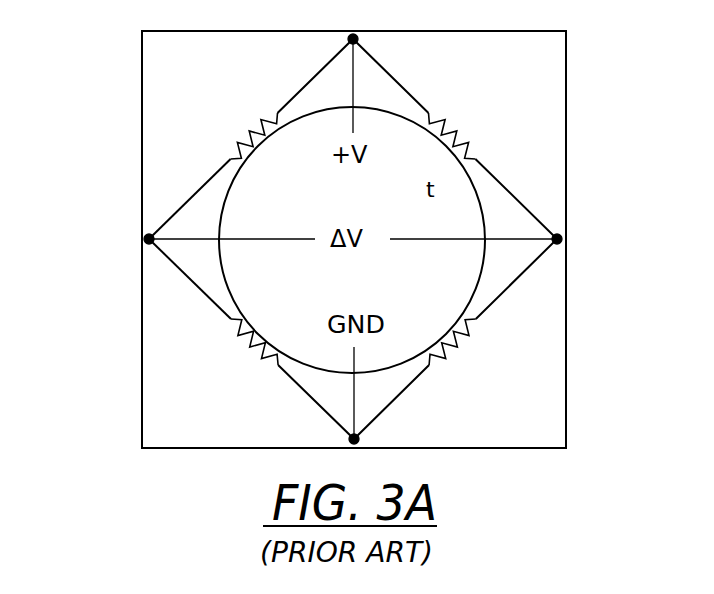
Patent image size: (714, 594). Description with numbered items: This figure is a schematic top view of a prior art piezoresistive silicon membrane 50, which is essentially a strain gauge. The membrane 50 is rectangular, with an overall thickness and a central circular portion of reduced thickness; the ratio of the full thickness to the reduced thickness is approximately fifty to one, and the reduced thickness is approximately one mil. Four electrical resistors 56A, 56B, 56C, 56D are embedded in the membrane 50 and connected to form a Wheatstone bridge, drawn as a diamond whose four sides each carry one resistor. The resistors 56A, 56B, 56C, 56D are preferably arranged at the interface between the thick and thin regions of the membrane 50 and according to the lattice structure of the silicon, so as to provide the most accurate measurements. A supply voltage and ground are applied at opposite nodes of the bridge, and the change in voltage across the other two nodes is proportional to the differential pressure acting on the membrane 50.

The piezoresistive silicon membrane 50 is at (160, 177).
The electrical resistor 56A is at (240, 138).
The electrical resistor 56B is at (465, 140).
The electrical resistor 56C is at (473, 332).
The electrical resistor 56D is at (252, 348).